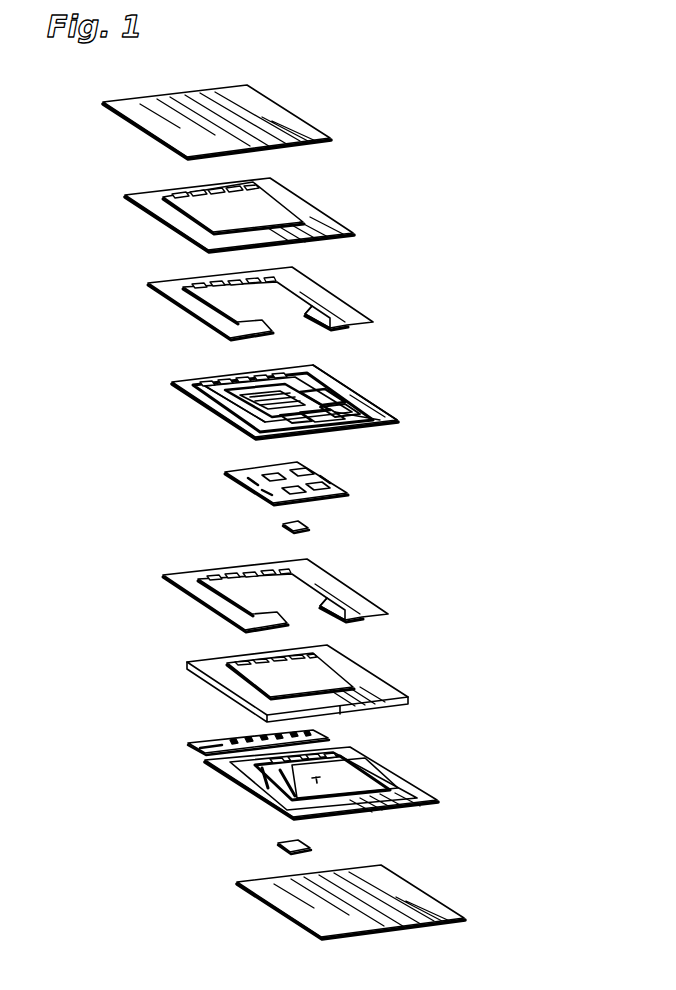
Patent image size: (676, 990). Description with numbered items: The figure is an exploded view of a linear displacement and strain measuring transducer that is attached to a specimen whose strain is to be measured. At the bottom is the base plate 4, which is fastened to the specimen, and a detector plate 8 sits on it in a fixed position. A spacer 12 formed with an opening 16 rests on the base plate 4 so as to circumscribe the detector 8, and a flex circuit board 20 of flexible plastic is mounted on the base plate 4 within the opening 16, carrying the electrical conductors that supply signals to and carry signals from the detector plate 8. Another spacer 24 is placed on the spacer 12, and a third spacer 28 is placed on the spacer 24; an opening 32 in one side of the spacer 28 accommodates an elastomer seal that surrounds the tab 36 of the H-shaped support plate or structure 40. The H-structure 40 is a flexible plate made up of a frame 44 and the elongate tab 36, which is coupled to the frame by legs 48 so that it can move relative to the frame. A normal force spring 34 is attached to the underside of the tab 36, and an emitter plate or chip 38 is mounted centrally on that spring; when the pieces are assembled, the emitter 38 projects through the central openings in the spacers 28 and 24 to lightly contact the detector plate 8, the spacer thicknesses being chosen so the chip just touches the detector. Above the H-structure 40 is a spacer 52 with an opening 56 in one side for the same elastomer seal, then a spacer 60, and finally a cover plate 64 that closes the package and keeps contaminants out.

The base plate 4 is at (463, 918).
The detector plate 8 is at (310, 848).
The spacer 12 is at (420, 793).
The opening 16 is at (317, 778).
The flex circuit board 20 is at (327, 737).
The spacer 24 is at (413, 702).
The spacer 28 is at (383, 605).
The opening 32 is at (307, 610).
The normal force spring 34 is at (347, 495).
The tab 36 is at (323, 425).
The emitter plate or chip 38 is at (307, 525).
The H-shaped support plate or structure 40 is at (397, 422).
The frame 44 is at (342, 388).
The legs 48 is at (218, 393).
The spacer 52 is at (377, 322).
The opening 56 is at (292, 322).
The spacer 60 is at (363, 230).
The cover plate 64 is at (333, 140).